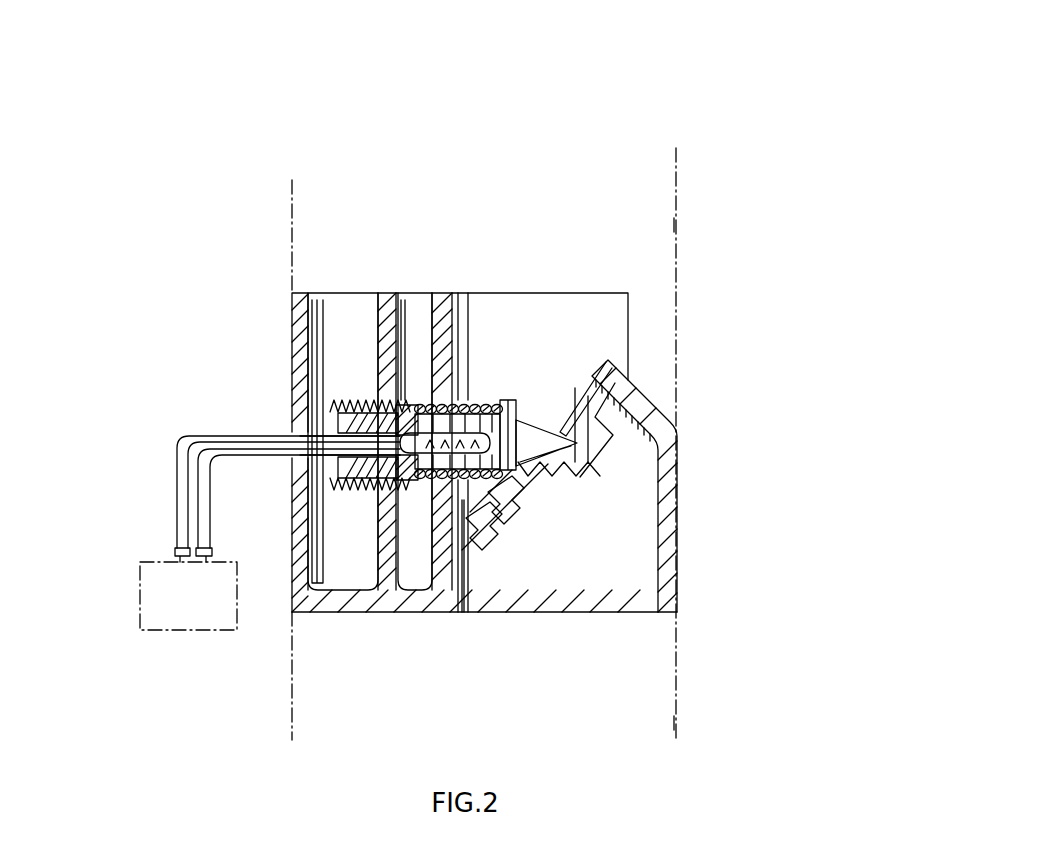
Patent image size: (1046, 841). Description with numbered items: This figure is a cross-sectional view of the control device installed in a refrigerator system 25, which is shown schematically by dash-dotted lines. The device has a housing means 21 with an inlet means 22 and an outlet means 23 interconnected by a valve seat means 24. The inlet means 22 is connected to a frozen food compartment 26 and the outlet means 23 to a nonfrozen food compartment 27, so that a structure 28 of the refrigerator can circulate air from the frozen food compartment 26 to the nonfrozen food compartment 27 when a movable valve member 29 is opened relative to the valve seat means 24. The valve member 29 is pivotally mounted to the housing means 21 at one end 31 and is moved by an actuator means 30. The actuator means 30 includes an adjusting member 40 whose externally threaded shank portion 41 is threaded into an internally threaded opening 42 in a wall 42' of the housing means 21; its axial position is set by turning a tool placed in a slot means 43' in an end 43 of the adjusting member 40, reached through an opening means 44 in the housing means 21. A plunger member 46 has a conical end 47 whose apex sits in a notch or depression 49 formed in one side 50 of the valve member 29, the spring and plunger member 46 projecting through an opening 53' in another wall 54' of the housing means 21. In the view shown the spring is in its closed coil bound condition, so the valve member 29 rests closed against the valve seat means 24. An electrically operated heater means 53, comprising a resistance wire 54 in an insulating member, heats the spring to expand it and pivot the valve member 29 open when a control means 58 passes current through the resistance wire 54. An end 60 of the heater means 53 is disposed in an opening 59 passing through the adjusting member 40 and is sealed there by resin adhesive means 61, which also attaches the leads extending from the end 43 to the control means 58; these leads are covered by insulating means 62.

The housing means 21 is at (302, 390).
The inlet means 22 is at (656, 600).
The outlet means 23 is at (474, 322).
The valve seat means 24 is at (470, 550).
The refrigerator system 25 is at (690, 177).
The frozen food compartment 26 is at (677, 723).
The nonfrozen food compartment 27 is at (677, 223).
The structure of a refrigerator 28 is at (292, 708).
The movable valve member 29 is at (598, 472).
The actuator means 30 is at (506, 405).
The end of valve member 31 is at (626, 368).
The adjusting member 40 is at (413, 398).
The externally threaded shank portion 41 is at (336, 486).
The internally threaded opening 42 is at (369, 507).
The wall of housing means 42' is at (370, 319).
The end of adjusting member 43 is at (315, 475).
The slot means 43' is at (309, 402).
The opening means 44 is at (326, 412).
The plunger member 46 is at (543, 484).
The conical end 47 is at (557, 437).
The notch or depression 49 is at (569, 434).
The side of valve member 50 is at (508, 518).
The electrically operated heater means 53 is at (475, 360).
The opening in wall 53' is at (417, 519).
The resistance wire 54 is at (490, 404).
The another wall of housing means 54' is at (428, 302).
The control means 58 is at (140, 596).
The opening 59 is at (332, 434).
The end of heater means 60 is at (388, 400).
The resin adhesive means 61 is at (370, 446).
The insulating means 62 is at (176, 493).